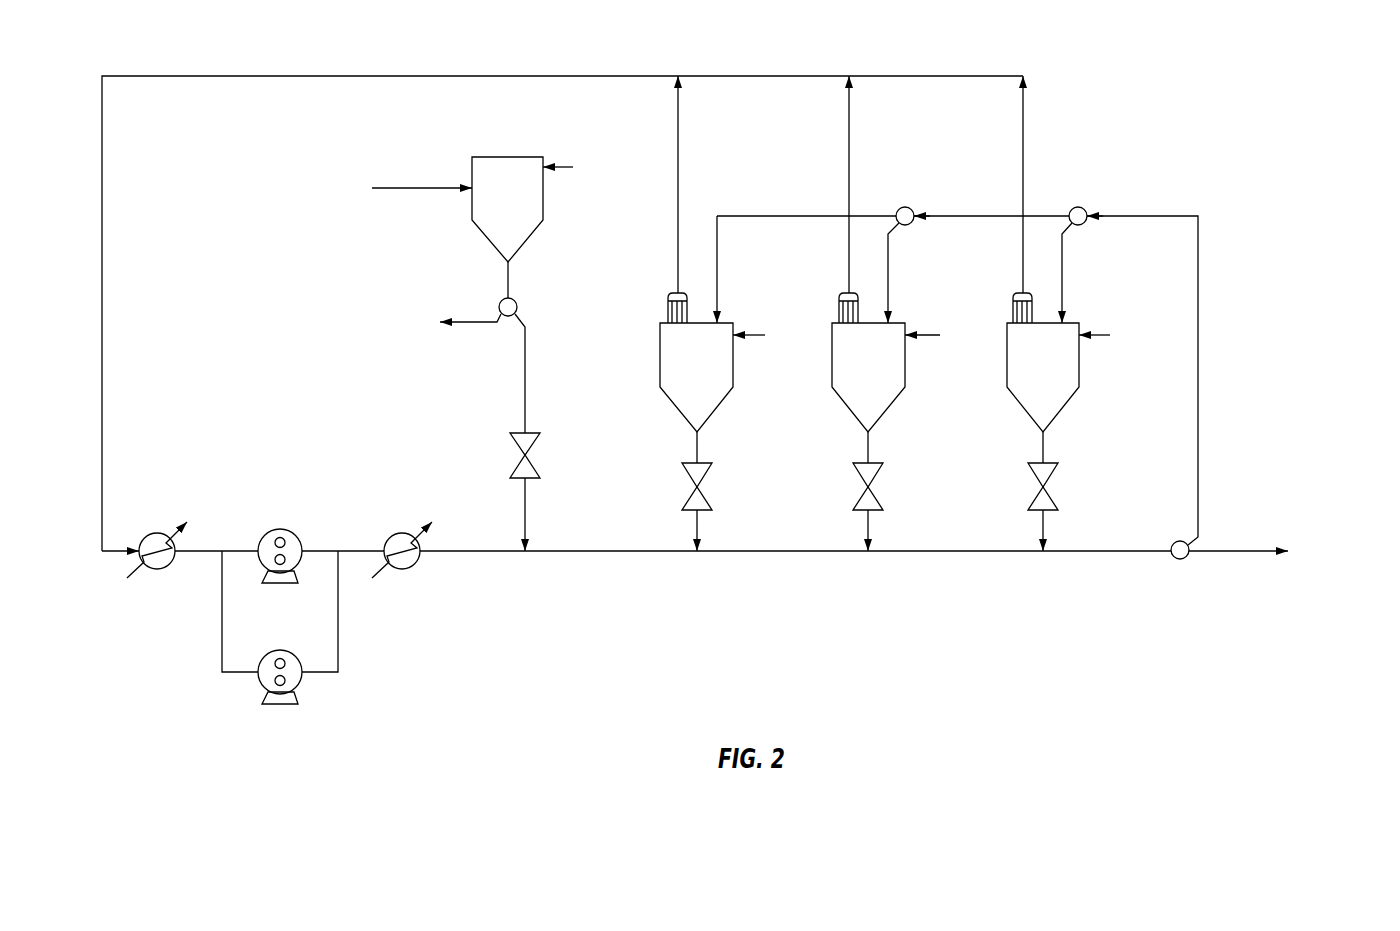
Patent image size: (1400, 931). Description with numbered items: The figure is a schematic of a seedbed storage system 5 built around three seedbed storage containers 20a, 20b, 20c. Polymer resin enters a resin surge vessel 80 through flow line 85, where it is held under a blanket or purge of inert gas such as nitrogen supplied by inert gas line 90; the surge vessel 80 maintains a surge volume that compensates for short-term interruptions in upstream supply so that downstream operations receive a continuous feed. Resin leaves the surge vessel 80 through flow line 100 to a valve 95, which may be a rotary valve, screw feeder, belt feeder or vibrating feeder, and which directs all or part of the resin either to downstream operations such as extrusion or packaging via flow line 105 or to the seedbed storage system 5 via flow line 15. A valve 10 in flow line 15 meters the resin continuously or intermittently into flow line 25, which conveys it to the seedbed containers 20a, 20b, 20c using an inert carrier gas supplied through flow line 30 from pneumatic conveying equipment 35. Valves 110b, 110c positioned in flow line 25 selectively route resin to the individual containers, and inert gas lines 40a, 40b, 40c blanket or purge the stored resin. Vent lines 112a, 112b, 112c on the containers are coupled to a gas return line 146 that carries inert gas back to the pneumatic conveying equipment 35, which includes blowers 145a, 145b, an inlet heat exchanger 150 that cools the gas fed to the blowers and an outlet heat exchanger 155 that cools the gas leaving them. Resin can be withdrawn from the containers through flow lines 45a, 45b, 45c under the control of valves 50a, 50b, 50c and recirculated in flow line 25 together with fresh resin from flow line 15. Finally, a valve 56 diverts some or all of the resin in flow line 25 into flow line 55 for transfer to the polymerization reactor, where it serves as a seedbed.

The seedbed storage system 5 is at (1068, 50).
The valve 10 is at (532, 462).
The flow line 15 is at (527, 372).
The seedbed storage container 20a is at (660, 343).
The seedbed storage container 20b is at (832, 353).
The seedbed storage container 20c is at (1007, 355).
The flow line 25 is at (1198, 382).
The flow line 30 is at (467, 552).
The pneumatic conveying equipment 35 is at (341, 608).
The inert gas line 40a is at (752, 335).
The inert gas line 40b is at (923, 335).
The inert gas line 40c is at (1097, 335).
The flow line 45a is at (698, 447).
The flow line 45b is at (870, 447).
The flow line 45c is at (1045, 447).
The valve 50a is at (705, 493).
The valve 50b is at (877, 493).
The valve 50c is at (1051, 493).
The flow line 55 is at (1247, 553).
The valve 56 is at (1182, 560).
The resin surge vessel 80 is at (543, 188).
The flow line 85 is at (435, 185).
The inert gas line 90 is at (572, 167).
The valve 95 is at (500, 302).
The flow line 100 is at (512, 280).
The flow line 105 is at (462, 328).
The valve 110b is at (907, 207).
The valve 110c is at (1080, 207).
The vent line 112a is at (678, 262).
The vent line 112b is at (849, 242).
The vent line 112c is at (1023, 242).
The blower 145a is at (280, 530).
The blower 145b is at (293, 703).
The gas return line 146 is at (101, 292).
The inlet heat exchanger 150 is at (157, 573).
The outlet heat exchanger 155 is at (402, 573).